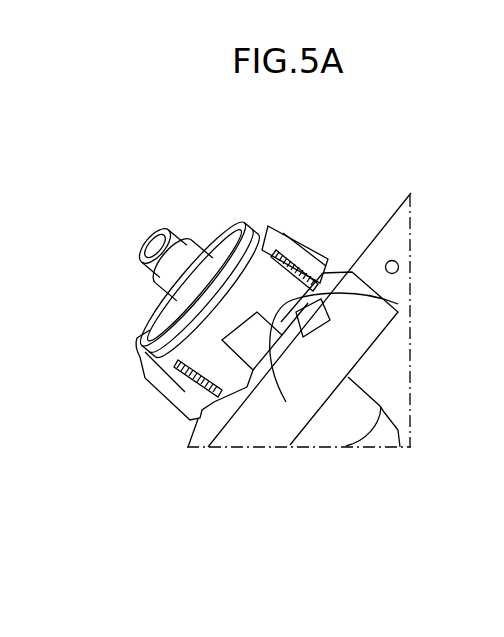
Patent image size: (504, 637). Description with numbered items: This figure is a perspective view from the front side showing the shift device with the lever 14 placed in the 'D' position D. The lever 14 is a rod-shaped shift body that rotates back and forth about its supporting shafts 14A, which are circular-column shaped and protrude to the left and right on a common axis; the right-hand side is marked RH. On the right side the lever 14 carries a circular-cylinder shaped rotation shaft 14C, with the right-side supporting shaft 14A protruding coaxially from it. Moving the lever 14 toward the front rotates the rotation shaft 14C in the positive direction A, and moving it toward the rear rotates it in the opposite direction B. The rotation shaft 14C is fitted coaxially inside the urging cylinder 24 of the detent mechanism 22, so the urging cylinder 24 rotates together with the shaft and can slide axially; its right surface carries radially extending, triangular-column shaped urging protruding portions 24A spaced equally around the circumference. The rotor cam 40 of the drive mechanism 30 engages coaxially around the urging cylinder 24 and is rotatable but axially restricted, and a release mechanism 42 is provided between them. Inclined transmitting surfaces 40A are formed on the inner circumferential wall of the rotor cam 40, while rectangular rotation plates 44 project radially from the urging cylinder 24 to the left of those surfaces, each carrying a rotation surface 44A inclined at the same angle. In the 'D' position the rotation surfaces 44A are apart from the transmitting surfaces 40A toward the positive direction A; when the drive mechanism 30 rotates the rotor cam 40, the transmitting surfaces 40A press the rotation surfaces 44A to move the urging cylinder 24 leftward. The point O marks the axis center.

The lever 14 is at (396, 212).
The supporting shaft 14A is at (171, 229).
The rotation shaft 14C is at (243, 395).
The detent mechanism 22 is at (200, 245).
The urging cylinder 24 is at (253, 237).
The urging protruding portion 24A is at (163, 316).
The drive mechanism 30 is at (245, 372).
The rotor cam 40 is at (152, 386).
The transmitting surface 40A is at (290, 290).
The release mechanism 42 is at (246, 323).
The rotation plate 44 is at (398, 305).
The rotation surface 44A is at (252, 393).
The positive direction A is at (229, 217).
The opposite direction B is at (147, 319).
The 'D' position D is at (370, 238).
The center O is at (392, 267).
The right-hand direction RH is at (302, 142).